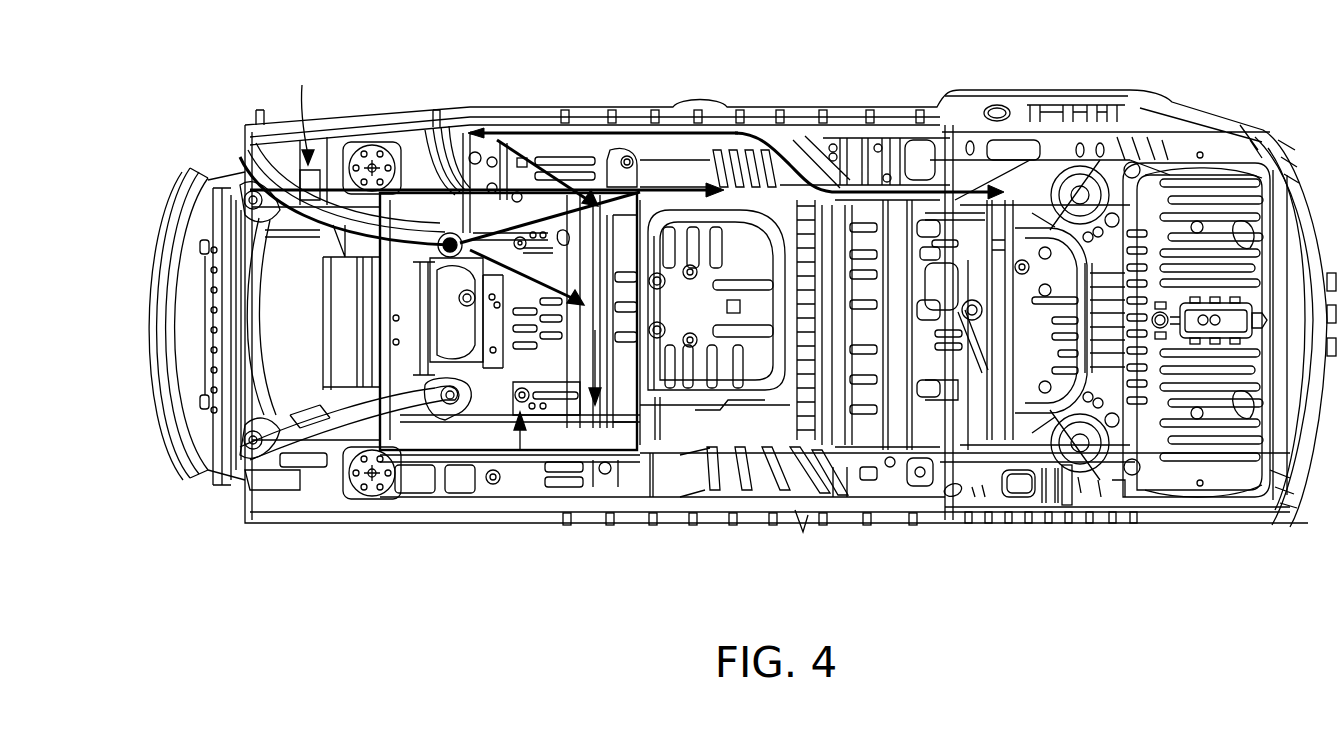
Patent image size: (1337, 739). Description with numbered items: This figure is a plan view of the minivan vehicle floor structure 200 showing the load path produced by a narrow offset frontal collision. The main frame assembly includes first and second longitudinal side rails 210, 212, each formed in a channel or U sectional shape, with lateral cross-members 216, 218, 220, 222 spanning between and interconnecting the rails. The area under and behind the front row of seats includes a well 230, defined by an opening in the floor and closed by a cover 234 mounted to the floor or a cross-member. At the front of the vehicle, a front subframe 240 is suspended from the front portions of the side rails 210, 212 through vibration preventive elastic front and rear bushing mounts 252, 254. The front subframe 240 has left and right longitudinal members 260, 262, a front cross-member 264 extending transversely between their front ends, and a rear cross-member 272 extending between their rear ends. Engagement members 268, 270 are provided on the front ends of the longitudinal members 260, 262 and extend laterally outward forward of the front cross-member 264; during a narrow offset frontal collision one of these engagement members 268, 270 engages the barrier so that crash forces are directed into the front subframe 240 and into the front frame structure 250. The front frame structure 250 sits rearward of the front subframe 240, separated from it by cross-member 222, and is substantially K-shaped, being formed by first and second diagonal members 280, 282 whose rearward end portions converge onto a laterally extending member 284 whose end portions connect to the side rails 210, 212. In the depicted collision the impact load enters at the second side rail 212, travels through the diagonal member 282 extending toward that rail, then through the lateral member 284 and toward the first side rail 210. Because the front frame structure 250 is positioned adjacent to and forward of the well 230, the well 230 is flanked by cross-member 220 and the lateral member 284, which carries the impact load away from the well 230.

The vehicle floor structure 200 is at (813, 97).
The first longitudinal member or side rail 210 is at (673, 442).
The second longitudinal member or side rail 212 is at (662, 187).
The lateral cross-member 216 is at (905, 220).
The lateral cross-member 218 is at (817, 223).
The lateral cross-member 220 is at (783, 227).
The lateral cross-member 222 is at (452, 232).
The well 230 is at (760, 213).
The cover 234 is at (707, 217).
The front subframe 240 is at (302, 130).
The front frame structure 250 is at (516, 452).
The front bushing mount 252 is at (242, 183).
The rear bushing mount 254 is at (424, 205).
The left longitudinal member 260 is at (328, 470).
The right longitudinal member 262 is at (333, 203).
The front cross-member 264 is at (240, 328).
The engagement member 268 is at (273, 470).
The engagement member 270 is at (247, 152).
The rear cross-member 272 is at (385, 485).
The first diagonal member 280 is at (515, 385).
The second diagonal member 282 is at (545, 372).
The laterally extending member 284 is at (605, 130).